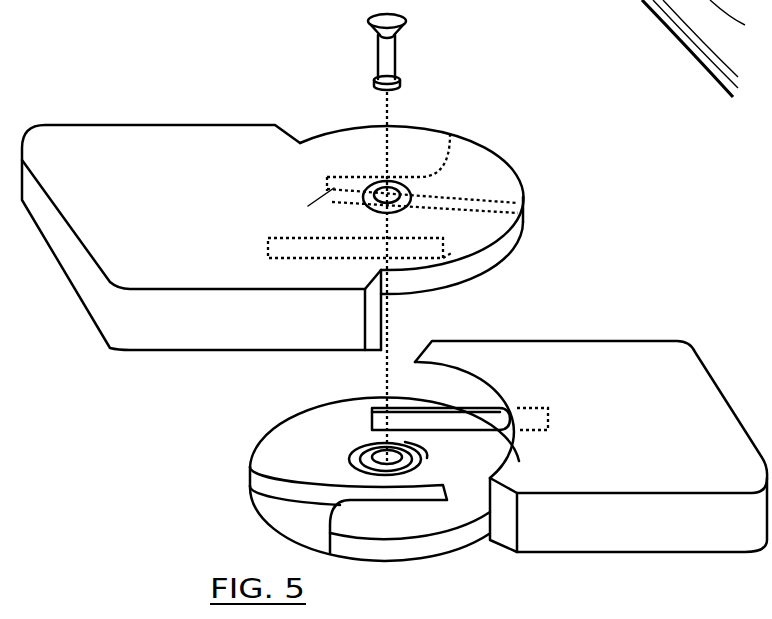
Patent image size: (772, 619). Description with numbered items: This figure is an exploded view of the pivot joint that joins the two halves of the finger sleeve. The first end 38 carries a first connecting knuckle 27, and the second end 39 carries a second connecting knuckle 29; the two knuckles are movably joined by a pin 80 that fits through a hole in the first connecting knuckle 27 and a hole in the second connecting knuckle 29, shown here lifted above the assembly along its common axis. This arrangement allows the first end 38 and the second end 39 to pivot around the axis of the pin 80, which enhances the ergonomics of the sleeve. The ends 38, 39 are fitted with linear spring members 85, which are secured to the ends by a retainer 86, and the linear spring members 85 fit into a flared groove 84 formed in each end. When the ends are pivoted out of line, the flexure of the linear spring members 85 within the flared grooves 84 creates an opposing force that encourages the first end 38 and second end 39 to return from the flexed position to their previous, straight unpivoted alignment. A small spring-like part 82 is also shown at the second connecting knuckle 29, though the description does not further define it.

The first connecting knuckle 27 is at (374, 181).
The second connecting knuckle 29 is at (357, 448).
The first end 38 is at (350, 126).
The second end 39 is at (386, 563).
The pin 80 is at (387, 63).
The spring 82 is at (405, 442).
The flared groove 84 is at (483, 144).
The linear spring member 85 is at (453, 252).
The retainer 86 is at (262, 252).